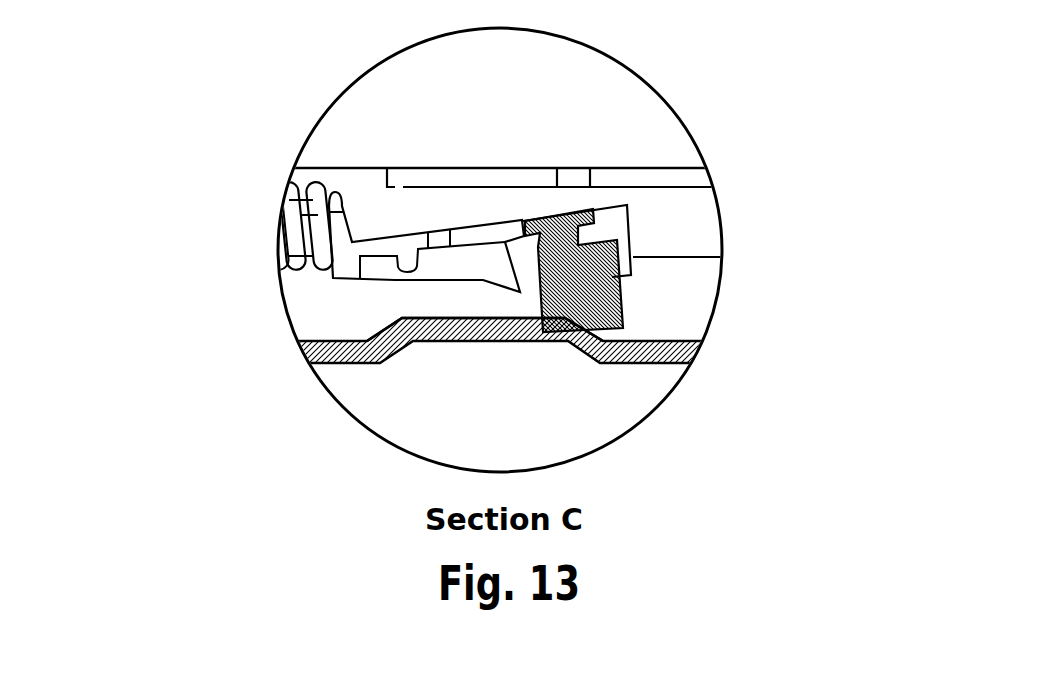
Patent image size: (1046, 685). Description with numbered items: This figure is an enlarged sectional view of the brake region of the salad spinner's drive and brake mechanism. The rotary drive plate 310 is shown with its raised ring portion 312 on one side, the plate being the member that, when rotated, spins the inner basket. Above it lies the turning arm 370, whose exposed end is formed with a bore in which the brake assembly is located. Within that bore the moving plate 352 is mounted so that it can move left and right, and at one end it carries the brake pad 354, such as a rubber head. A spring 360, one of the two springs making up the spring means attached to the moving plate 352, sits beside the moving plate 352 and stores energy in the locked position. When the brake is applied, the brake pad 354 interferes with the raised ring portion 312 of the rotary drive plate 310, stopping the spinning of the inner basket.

The rotary drive plate 310 is at (645, 368).
The raised ring portion 312 is at (435, 343).
The moving plate 352 is at (480, 233).
The brake pad 354 is at (622, 300).
The spring 360 is at (300, 262).
The turning arm 370 is at (663, 179).